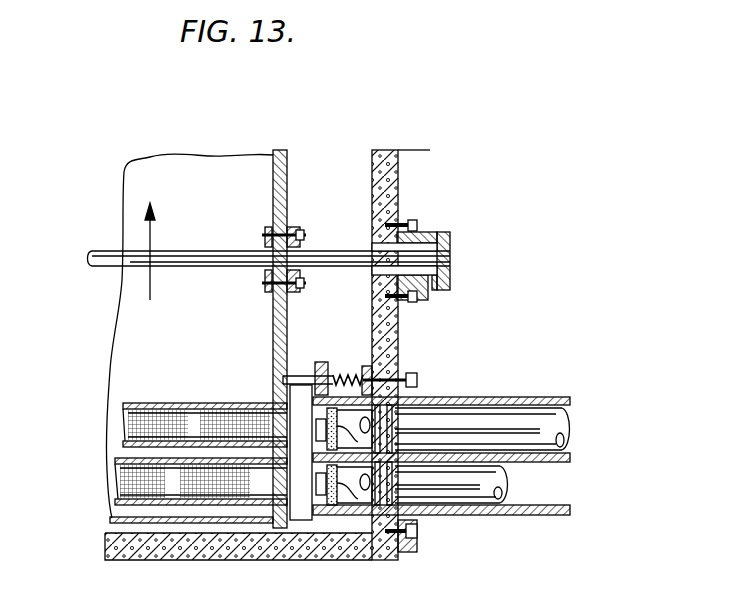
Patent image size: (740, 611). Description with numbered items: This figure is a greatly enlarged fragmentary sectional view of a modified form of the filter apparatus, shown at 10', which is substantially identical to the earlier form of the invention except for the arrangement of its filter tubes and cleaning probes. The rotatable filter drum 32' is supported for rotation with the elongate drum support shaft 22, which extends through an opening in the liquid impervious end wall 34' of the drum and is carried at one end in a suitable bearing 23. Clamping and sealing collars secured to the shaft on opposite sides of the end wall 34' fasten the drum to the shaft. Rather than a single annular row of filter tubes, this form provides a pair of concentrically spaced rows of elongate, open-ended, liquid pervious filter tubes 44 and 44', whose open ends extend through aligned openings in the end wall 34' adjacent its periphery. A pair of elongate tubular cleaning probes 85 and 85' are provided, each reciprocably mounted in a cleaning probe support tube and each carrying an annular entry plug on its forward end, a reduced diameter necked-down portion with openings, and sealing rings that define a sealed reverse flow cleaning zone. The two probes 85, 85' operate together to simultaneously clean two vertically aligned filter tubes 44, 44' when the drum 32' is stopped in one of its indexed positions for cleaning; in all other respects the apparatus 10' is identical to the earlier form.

The modified form of the invention 10' is at (160, 324).
The rotatable filter drum 32' is at (267, 335).
The end wall 34' is at (303, 339).
The drum support shaft 22 is at (195, 249).
The bearing 23 is at (447, 234).
The filter tubes 44' is at (205, 408).
The filter tubes 44 is at (170, 491).
The cleaning probe 85' is at (441, 413).
The cleaning probe 85 is at (441, 508).